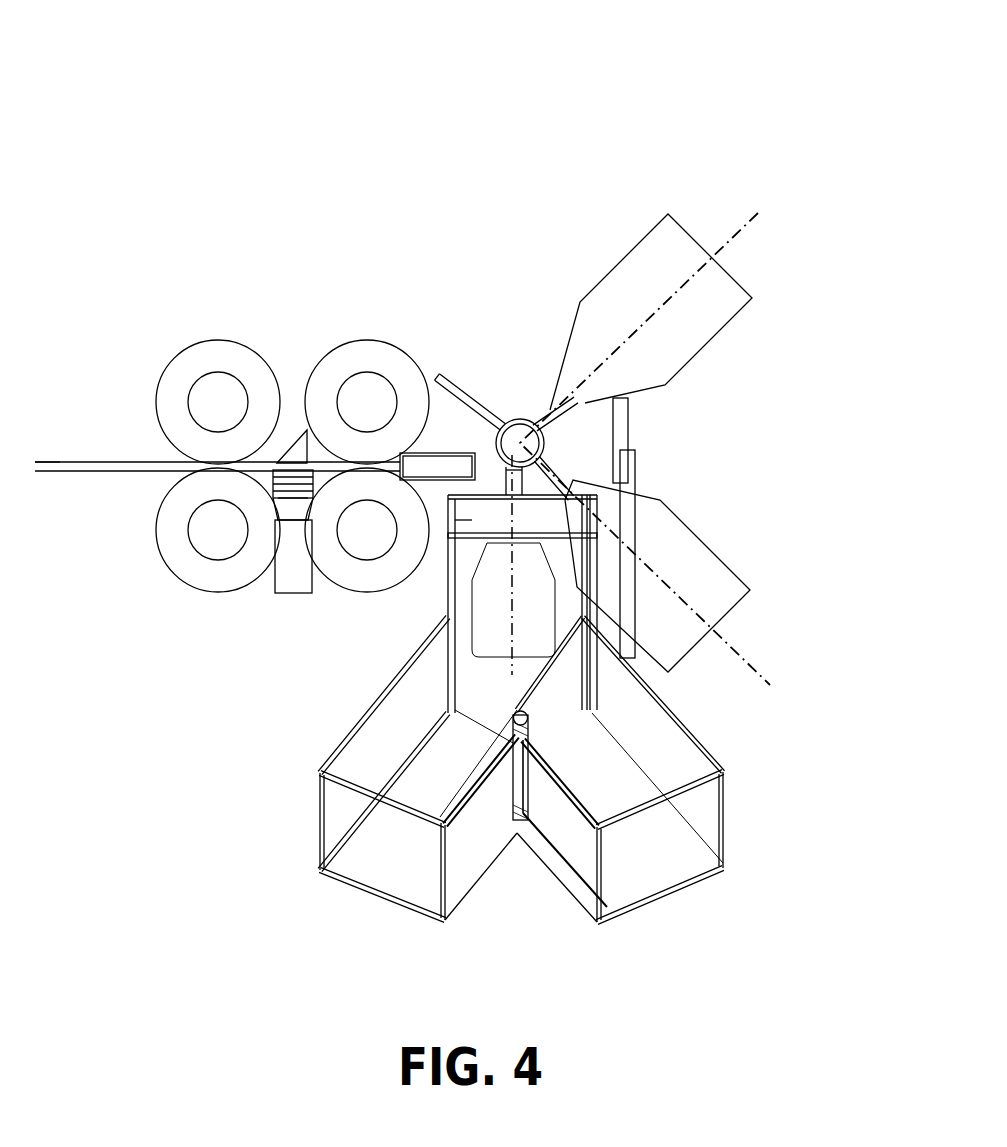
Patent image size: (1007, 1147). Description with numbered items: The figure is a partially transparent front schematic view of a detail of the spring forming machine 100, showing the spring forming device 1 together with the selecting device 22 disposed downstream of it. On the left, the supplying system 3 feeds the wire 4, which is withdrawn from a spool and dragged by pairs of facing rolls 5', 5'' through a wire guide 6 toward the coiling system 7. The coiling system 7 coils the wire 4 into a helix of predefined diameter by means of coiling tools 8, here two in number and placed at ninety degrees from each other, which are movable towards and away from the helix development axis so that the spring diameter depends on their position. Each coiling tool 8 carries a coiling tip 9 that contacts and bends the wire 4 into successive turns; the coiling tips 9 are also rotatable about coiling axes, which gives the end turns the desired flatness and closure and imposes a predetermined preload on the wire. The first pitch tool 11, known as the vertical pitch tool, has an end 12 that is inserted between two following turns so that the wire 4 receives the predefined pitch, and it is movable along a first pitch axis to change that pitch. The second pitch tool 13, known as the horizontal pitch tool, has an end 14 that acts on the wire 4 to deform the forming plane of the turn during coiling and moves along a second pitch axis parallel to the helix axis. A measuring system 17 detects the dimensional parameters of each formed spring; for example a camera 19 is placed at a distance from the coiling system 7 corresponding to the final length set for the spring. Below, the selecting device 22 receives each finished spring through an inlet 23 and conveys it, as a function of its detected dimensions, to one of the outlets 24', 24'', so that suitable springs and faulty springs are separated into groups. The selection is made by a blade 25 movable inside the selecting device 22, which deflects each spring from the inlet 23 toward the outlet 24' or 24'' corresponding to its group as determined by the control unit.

The spring forming machine 100 is at (258, 215).
The spring forming device 1 is at (747, 193).
The supplying system 3 is at (125, 350).
The wire 4 is at (137, 472).
The facing rolls 5' is at (292, 342).
The facing rolls 5'' is at (251, 549).
The wire guide 6 is at (465, 392).
The coiling system 7 is at (647, 443).
The coiling tool 8 is at (657, 363).
The coiling tip 9 is at (557, 407).
The first pitch tool 11 is at (472, 617).
The end of first pitch tool 12 is at (508, 490).
The second pitch tool 13 is at (500, 413).
The end of second pitch tool 14 is at (525, 422).
The measuring system 17 is at (292, 400).
The camera 19 is at (296, 447).
The selecting device 22 is at (400, 745).
The inlet 23 is at (472, 522).
The outlet 24' is at (354, 862).
The outlet 24'' is at (660, 874).
The blade 25 is at (562, 715).